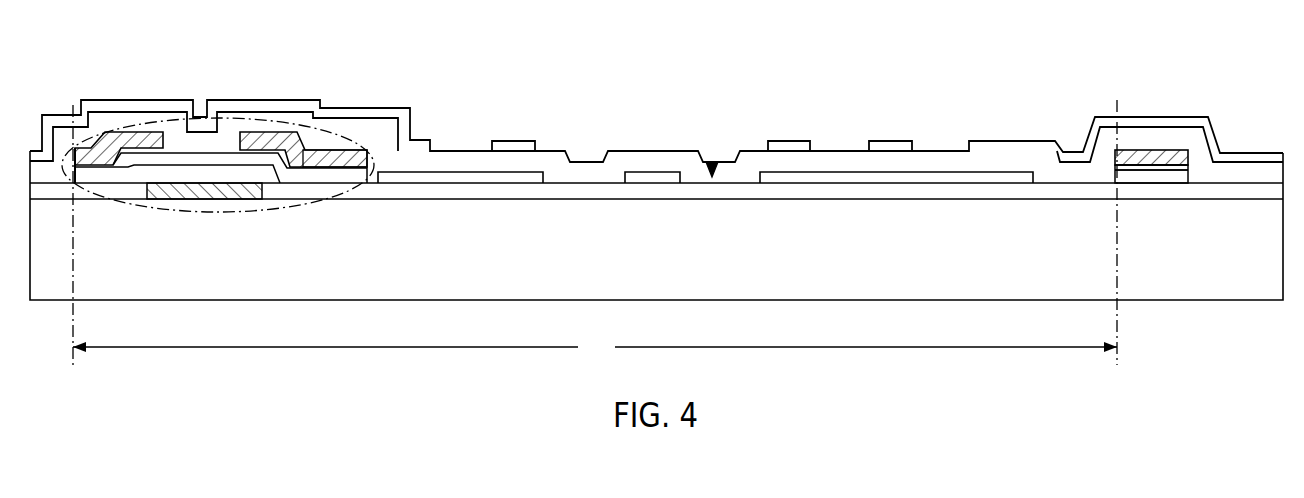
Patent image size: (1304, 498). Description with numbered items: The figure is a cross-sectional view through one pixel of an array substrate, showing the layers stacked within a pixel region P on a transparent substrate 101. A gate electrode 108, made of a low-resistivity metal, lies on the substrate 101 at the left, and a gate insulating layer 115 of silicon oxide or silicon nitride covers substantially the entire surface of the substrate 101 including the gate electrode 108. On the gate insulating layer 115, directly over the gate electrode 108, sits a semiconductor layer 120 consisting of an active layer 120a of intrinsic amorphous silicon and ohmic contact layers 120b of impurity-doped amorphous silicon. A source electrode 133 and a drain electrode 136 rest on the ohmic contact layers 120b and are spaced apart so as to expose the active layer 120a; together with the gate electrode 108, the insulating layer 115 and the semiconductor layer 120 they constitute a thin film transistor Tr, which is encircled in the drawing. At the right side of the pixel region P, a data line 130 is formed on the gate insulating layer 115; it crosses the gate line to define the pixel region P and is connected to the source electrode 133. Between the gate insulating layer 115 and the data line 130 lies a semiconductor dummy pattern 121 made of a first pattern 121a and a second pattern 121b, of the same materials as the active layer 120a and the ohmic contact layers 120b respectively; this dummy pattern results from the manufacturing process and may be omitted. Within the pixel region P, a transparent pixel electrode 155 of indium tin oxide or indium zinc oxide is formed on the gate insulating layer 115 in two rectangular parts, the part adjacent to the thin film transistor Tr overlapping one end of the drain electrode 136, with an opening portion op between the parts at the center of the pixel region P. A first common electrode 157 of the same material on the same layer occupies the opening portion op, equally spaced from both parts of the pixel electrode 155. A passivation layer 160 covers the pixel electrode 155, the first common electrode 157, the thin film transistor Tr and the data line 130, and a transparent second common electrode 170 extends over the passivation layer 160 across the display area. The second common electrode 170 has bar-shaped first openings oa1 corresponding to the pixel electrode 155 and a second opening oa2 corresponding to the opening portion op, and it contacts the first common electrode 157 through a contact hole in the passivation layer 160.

The transparent substrate 101 is at (1268, 287).
The gate electrode 108 is at (202, 196).
The gate insulating layer 115 is at (576, 190).
The semiconductor layer 120 is at (343, 246).
The active layer 120a is at (298, 178).
The ohmic contact layers 120b is at (333, 168).
The semiconductor dummy pattern 121 is at (1185, 222).
The first pattern 121a is at (1143, 177).
The second pattern 121b is at (1178, 168).
The data line 130 is at (1148, 150).
The source electrode 133 is at (131, 132).
The drain electrode 136 is at (265, 133).
The pixel electrode 155 is at (473, 176).
The first common electrode 157 is at (651, 178).
The passivation layer 160 is at (357, 127).
The second common electrode 170 is at (383, 108).
The thin film transistor Tr is at (145, 208).
The pixel region P is at (595, 232).
The first openings oa1 is at (457, 140).
The second opening oa2 is at (655, 140).
The opening portion op is at (713, 160).